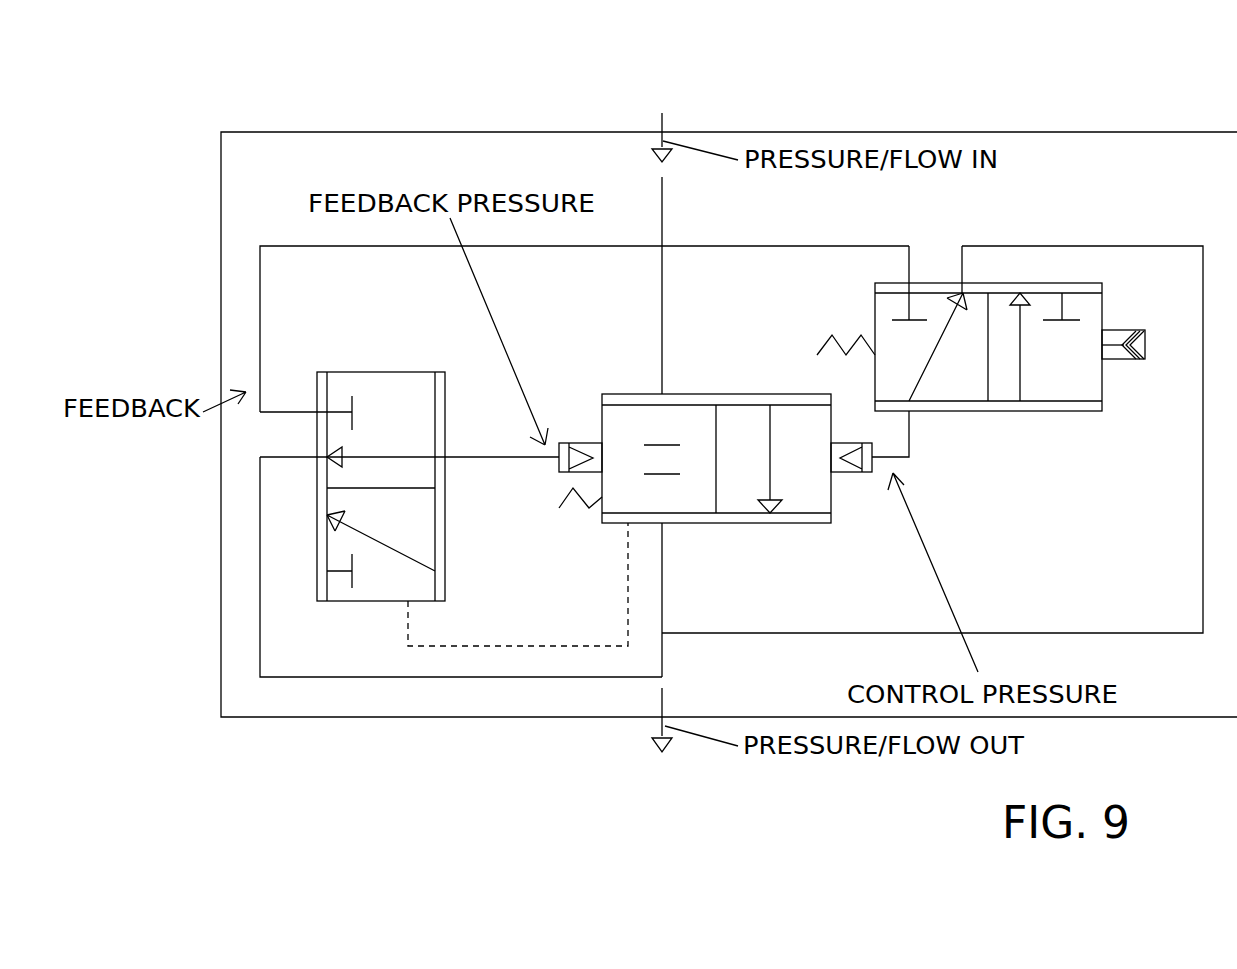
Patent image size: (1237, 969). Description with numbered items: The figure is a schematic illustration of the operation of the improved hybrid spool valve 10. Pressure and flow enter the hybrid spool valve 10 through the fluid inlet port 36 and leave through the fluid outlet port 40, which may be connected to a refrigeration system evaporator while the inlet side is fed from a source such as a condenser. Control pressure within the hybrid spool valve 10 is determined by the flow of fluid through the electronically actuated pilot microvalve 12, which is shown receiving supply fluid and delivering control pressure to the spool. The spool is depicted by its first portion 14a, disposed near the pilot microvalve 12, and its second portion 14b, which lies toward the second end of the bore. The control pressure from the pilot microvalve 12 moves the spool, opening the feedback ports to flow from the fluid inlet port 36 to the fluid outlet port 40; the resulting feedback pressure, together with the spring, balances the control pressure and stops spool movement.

The hybrid spool valve 10 is at (242, 141).
The pilot microvalve 12 is at (1082, 298).
The first portion of the spool 14a is at (688, 403).
The second portion of the spool 14b is at (377, 600).
The fluid inlet port 36 is at (660, 394).
The fluid outlet port 40 is at (662, 523).